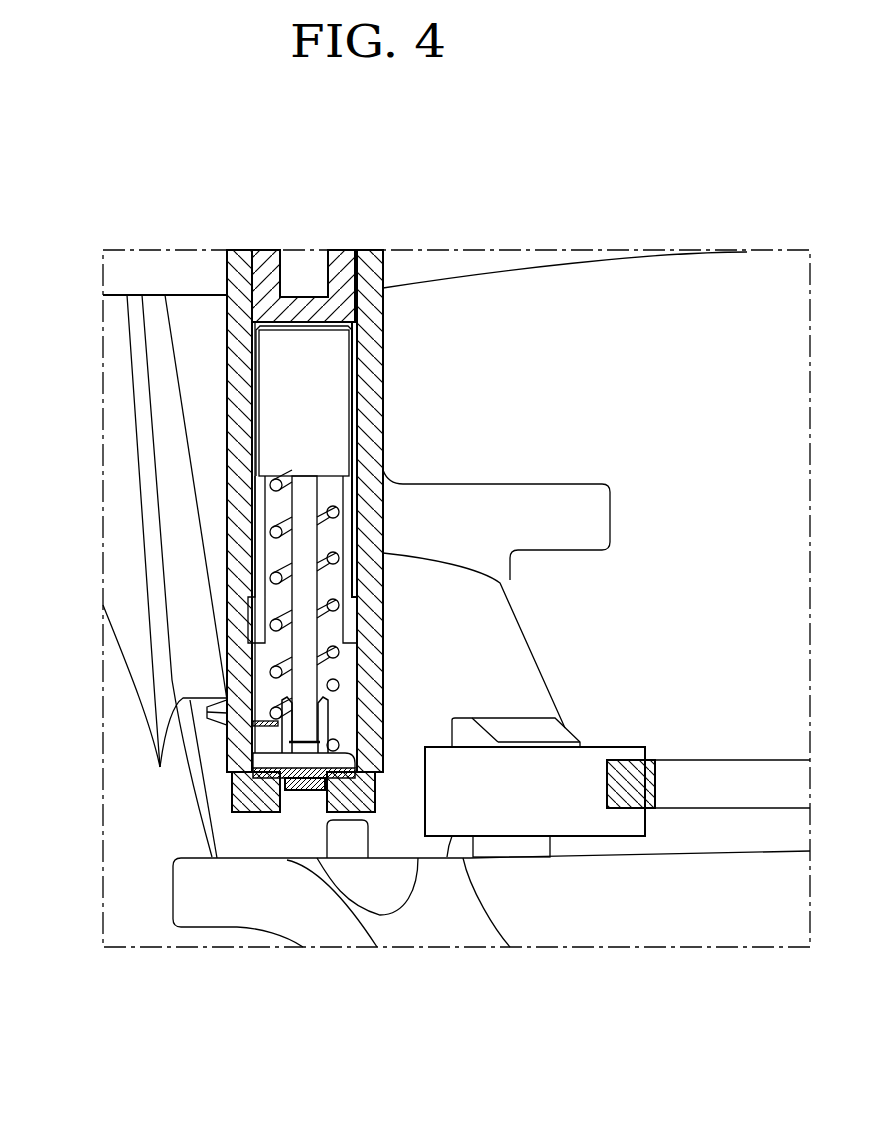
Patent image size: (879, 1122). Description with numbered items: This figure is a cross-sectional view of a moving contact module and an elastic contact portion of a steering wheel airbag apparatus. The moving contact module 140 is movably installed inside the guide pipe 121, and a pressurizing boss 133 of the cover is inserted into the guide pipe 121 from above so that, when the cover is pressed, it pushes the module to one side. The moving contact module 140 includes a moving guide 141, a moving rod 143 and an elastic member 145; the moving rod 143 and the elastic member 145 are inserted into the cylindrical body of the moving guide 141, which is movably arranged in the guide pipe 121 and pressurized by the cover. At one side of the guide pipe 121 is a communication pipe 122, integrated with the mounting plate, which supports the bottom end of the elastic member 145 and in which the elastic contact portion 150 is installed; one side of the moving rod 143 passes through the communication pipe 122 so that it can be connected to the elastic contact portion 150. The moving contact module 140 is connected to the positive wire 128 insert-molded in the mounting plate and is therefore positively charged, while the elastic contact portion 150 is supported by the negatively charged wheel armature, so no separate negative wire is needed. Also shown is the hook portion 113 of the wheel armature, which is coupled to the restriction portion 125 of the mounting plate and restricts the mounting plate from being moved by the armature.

The hook portion 113 is at (553, 728).
The guide pipe 121 is at (238, 425).
The communication pipe 122 is at (255, 758).
The restriction portion 125 is at (525, 800).
The positive wire 128 is at (226, 715).
The pressurizing boss 133 is at (302, 310).
The moving contact module 140 is at (272, 353).
The moving guide 141 is at (280, 402).
The moving rod 143 is at (302, 567).
The elastic member 145 is at (275, 623).
The elastic contact portion 150 is at (303, 792).